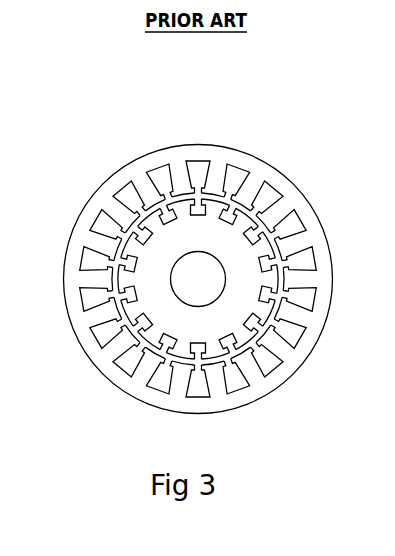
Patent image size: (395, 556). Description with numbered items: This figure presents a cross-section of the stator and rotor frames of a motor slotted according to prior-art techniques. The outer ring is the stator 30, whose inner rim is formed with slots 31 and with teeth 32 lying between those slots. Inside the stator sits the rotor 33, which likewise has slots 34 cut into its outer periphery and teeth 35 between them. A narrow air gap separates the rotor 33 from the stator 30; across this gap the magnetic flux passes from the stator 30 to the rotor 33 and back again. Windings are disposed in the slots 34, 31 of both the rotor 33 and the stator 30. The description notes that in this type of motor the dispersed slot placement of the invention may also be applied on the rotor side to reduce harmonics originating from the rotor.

The stator 30 is at (123, 165).
The slots 31 is at (203, 160).
The teeth 32 is at (92, 280).
The rotor 33 is at (213, 237).
The slots 34 is at (252, 318).
The teeth 35 is at (272, 280).